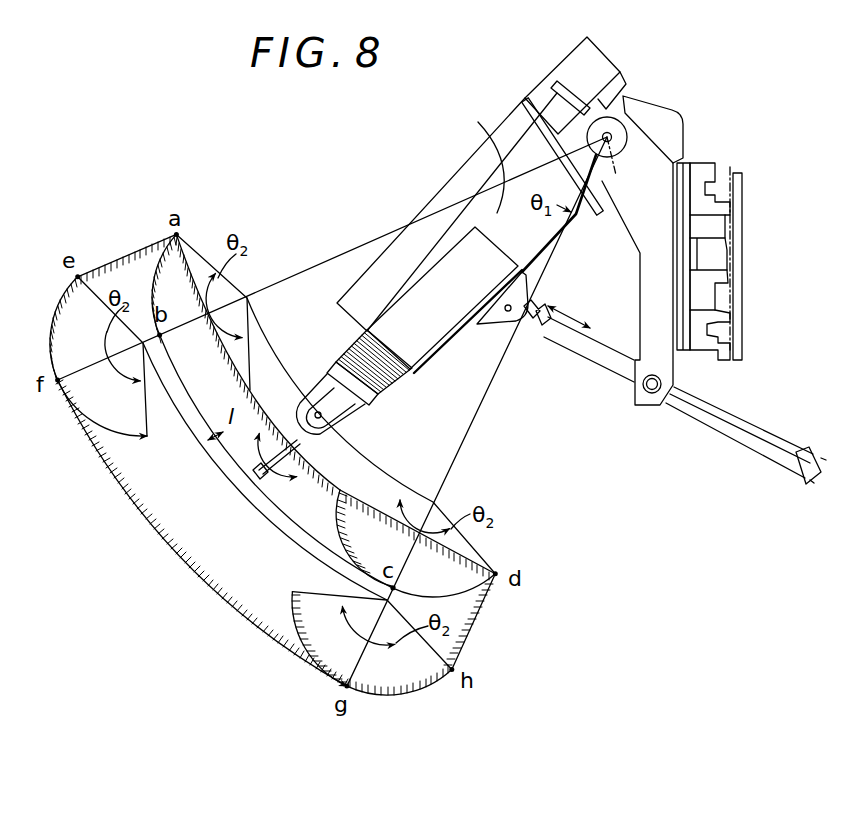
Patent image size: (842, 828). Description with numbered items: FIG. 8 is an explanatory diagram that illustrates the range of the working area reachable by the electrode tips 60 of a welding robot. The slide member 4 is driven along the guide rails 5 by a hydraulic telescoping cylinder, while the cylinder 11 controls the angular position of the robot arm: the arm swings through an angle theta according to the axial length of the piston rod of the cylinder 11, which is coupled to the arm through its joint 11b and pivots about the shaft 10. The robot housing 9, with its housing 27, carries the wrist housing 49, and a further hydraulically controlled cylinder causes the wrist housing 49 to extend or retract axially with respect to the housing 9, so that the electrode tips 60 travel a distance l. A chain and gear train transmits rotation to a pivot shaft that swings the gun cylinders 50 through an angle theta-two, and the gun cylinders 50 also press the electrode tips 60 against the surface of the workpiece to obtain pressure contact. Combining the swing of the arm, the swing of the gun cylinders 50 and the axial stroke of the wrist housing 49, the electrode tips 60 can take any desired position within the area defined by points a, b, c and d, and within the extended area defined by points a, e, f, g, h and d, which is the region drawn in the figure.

The slide member 4 is at (649, 270).
The guide rails 5 is at (727, 170).
The robot housing 9 is at (474, 173).
The pivot shaft 10 is at (609, 135).
The cylinder 11 is at (725, 441).
The joint of connecting rod 11b is at (527, 328).
The housing 27 is at (506, 152).
The wrist housing 49 is at (352, 418).
The gun cylinders 50 is at (304, 432).
The electrode tips 60 is at (261, 479).